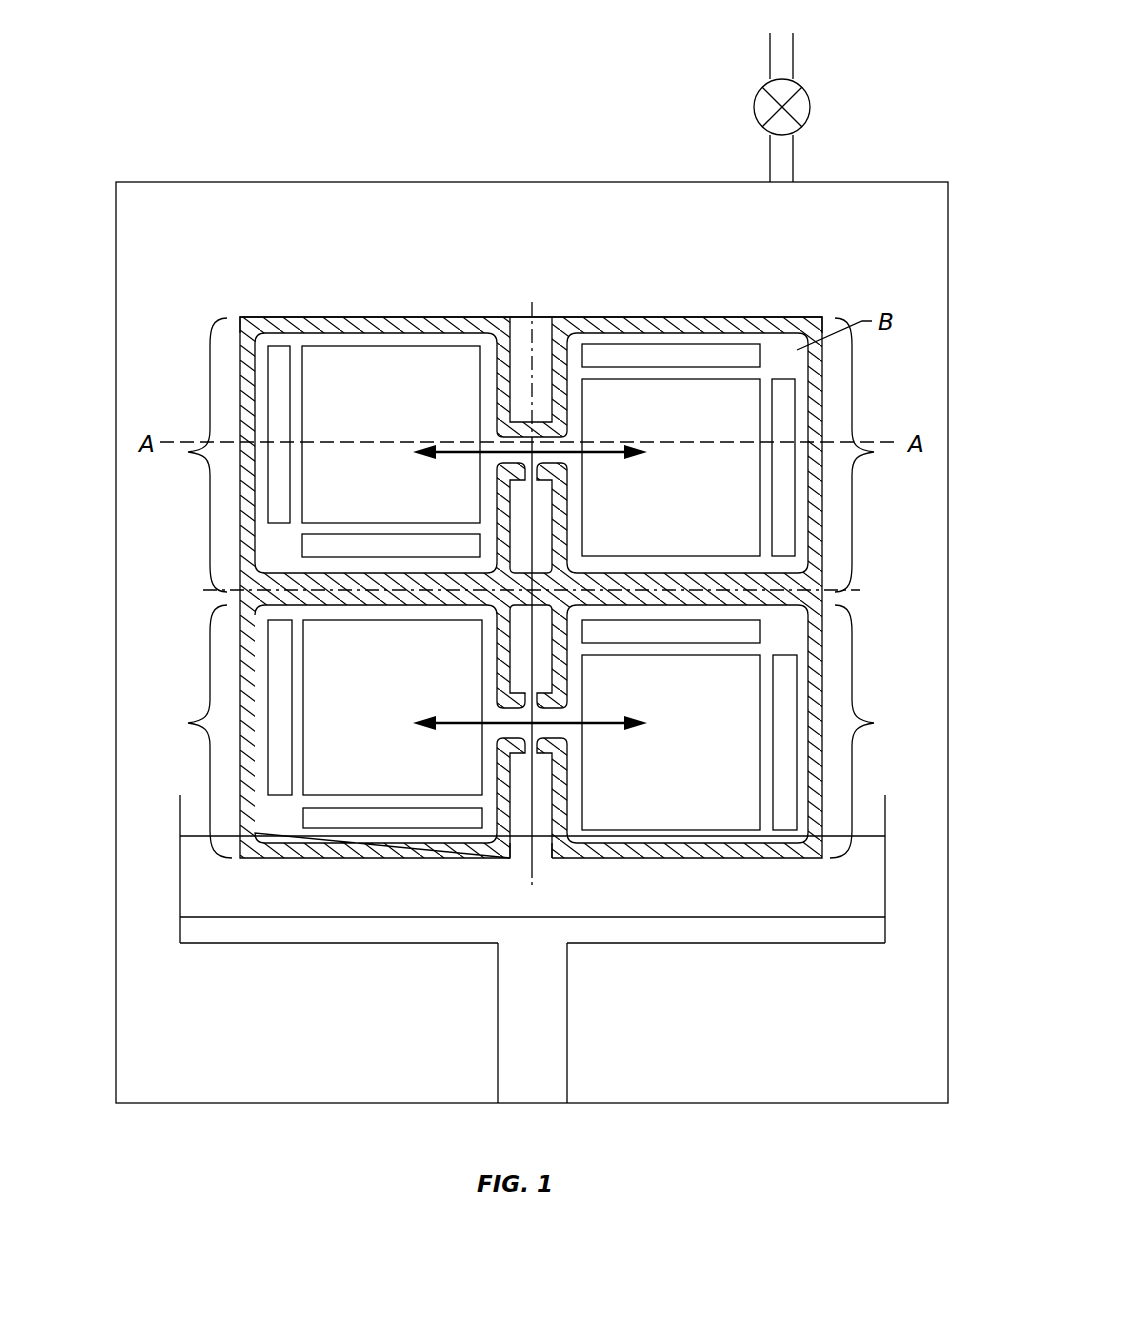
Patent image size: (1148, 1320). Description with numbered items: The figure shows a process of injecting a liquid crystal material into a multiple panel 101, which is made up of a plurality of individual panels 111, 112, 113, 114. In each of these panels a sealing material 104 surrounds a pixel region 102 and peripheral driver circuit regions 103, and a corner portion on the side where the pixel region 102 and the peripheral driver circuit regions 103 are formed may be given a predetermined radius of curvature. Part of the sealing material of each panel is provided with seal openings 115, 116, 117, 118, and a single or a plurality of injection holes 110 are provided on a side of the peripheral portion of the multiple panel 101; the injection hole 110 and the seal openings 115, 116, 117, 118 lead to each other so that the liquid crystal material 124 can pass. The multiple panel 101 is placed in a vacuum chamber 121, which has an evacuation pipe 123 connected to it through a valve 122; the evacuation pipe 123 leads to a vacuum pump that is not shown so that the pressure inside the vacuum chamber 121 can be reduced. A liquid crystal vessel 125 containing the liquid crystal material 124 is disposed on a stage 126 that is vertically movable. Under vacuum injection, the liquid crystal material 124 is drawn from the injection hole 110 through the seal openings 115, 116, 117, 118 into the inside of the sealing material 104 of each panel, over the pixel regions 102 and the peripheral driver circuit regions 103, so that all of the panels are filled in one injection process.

The multiple panel 101 is at (770, 314).
The pixel region 102 is at (433, 352).
The peripheral driver circuit regions 103 is at (280, 402).
The sealing material 104 is at (310, 316).
The injection hole 110 is at (543, 857).
The individual panel 111 is at (187, 455).
The individual panel 112 is at (879, 455).
The individual panel 113 is at (190, 731).
The individual panel 114 is at (877, 731).
The seal opening 115 is at (502, 453).
The seal opening 116 is at (560, 453).
The seal opening 117 is at (502, 727).
The seal opening 118 is at (560, 727).
The vacuum chamber 121 is at (215, 182).
The valve 122 is at (782, 96).
The evacuation pipe 123 is at (780, 40).
The liquid crystal material 124 is at (868, 835).
The liquid crystal vessel 125 is at (178, 878).
The stage 126 is at (553, 997).